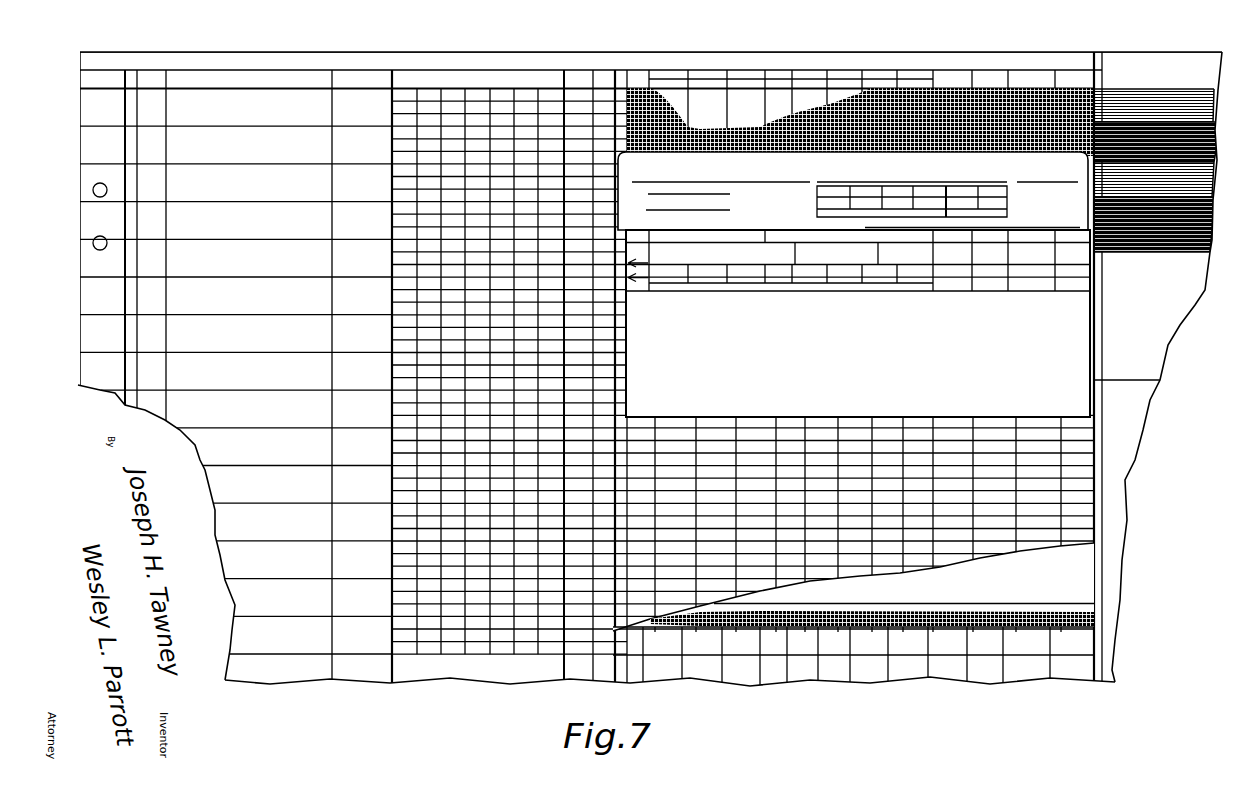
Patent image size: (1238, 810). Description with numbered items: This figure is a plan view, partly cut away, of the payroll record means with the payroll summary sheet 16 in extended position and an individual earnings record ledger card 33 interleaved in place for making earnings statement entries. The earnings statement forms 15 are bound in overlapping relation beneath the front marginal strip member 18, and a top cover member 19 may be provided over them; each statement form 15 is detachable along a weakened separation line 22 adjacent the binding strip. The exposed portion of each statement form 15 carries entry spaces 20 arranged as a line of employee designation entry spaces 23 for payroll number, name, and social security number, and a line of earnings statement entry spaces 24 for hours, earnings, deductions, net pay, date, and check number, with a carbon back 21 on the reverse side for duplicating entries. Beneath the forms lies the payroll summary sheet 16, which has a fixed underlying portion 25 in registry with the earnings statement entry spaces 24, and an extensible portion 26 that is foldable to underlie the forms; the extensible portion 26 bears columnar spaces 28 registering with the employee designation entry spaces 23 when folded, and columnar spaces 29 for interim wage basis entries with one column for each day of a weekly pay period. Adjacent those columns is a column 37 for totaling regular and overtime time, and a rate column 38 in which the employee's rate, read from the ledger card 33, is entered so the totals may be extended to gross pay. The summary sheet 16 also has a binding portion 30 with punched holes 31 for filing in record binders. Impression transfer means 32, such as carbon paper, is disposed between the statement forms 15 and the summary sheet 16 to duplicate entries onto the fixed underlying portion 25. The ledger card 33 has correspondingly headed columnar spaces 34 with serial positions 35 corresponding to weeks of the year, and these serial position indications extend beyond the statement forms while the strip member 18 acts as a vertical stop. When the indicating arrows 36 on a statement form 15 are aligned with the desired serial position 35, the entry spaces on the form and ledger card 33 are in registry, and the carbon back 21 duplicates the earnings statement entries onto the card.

The earnings statement form 15 is at (884, 373).
The payroll summary sheet 16 is at (633, 368).
The front marginal strip member 18 is at (1093, 682).
The top cover member 19 is at (1112, 467).
The entry spaces 20 is at (1091, 259).
The carbon back 21 is at (1163, 250).
The weakened separation line 22 is at (874, 323).
The employee designation entry spaces 23 is at (745, 252).
The earnings statement entry spaces 24 is at (1090, 277).
The fixed underlying portion 25 is at (890, 60).
The extensible portion 26 is at (352, 62).
The columnar spaces 28 is at (249, 102).
The columnar spaces for interim wage basis entries 29 is at (449, 105).
The binding portion 30 is at (100, 290).
The punched holes 31 is at (97, 240).
The impression transfer means 32 is at (713, 112).
The earnings record ledger card 33 is at (1078, 448).
The columnar spaces 34 is at (1000, 538).
The serial positions 35 is at (612, 258).
The indicating arrows 36 is at (652, 259).
The column of wage basis totals 37 is at (581, 66).
The rate column 38 is at (614, 68).